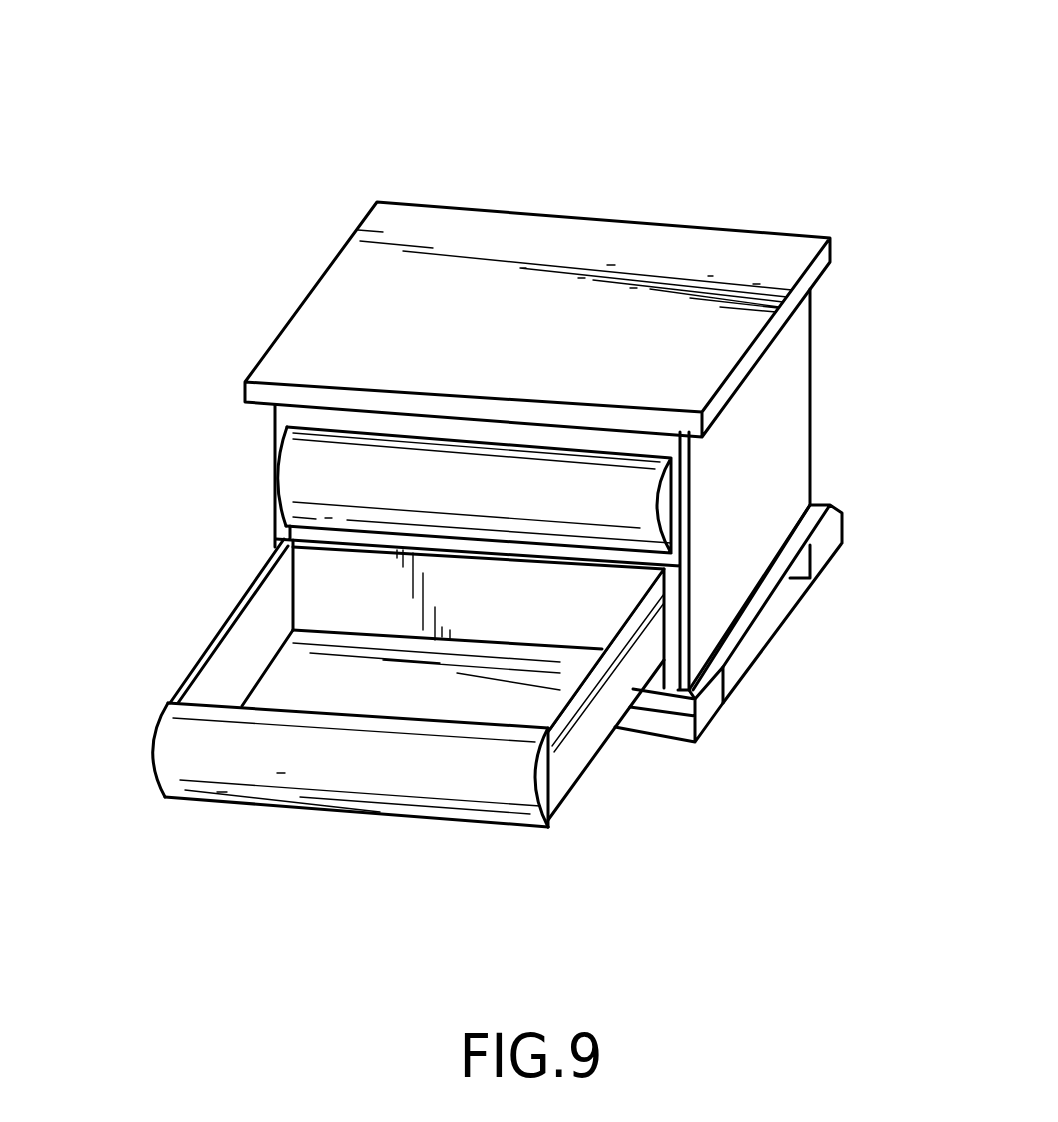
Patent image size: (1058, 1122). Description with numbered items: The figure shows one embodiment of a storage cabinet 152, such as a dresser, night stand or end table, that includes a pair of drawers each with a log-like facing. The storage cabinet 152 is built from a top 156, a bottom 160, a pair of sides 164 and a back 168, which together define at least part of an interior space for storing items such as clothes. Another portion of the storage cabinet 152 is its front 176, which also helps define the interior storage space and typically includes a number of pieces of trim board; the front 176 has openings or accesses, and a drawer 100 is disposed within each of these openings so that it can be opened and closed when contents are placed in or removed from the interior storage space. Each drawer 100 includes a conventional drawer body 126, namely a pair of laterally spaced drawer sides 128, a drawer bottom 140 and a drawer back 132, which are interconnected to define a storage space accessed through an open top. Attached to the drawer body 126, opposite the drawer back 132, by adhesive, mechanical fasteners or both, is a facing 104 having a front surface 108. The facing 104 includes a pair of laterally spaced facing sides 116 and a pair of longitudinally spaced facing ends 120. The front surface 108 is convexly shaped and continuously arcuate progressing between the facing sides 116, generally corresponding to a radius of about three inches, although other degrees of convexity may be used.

The drawer 100 is at (295, 463).
The facing 104 is at (425, 782).
The front surface 108 is at (470, 502).
The facing sides 116 is at (186, 700).
The facing ends 120 is at (155, 748).
The drawer body 126 is at (590, 770).
The drawer sides 128 is at (204, 652).
The drawer back 132 is at (527, 613).
The drawer bottom 140 is at (302, 697).
The storage cabinet 152 is at (824, 93).
The top 156 is at (518, 230).
The bottom 160 is at (770, 600).
The sides 164 is at (262, 407).
The back 168 is at (812, 318).
The front 176 is at (672, 663).